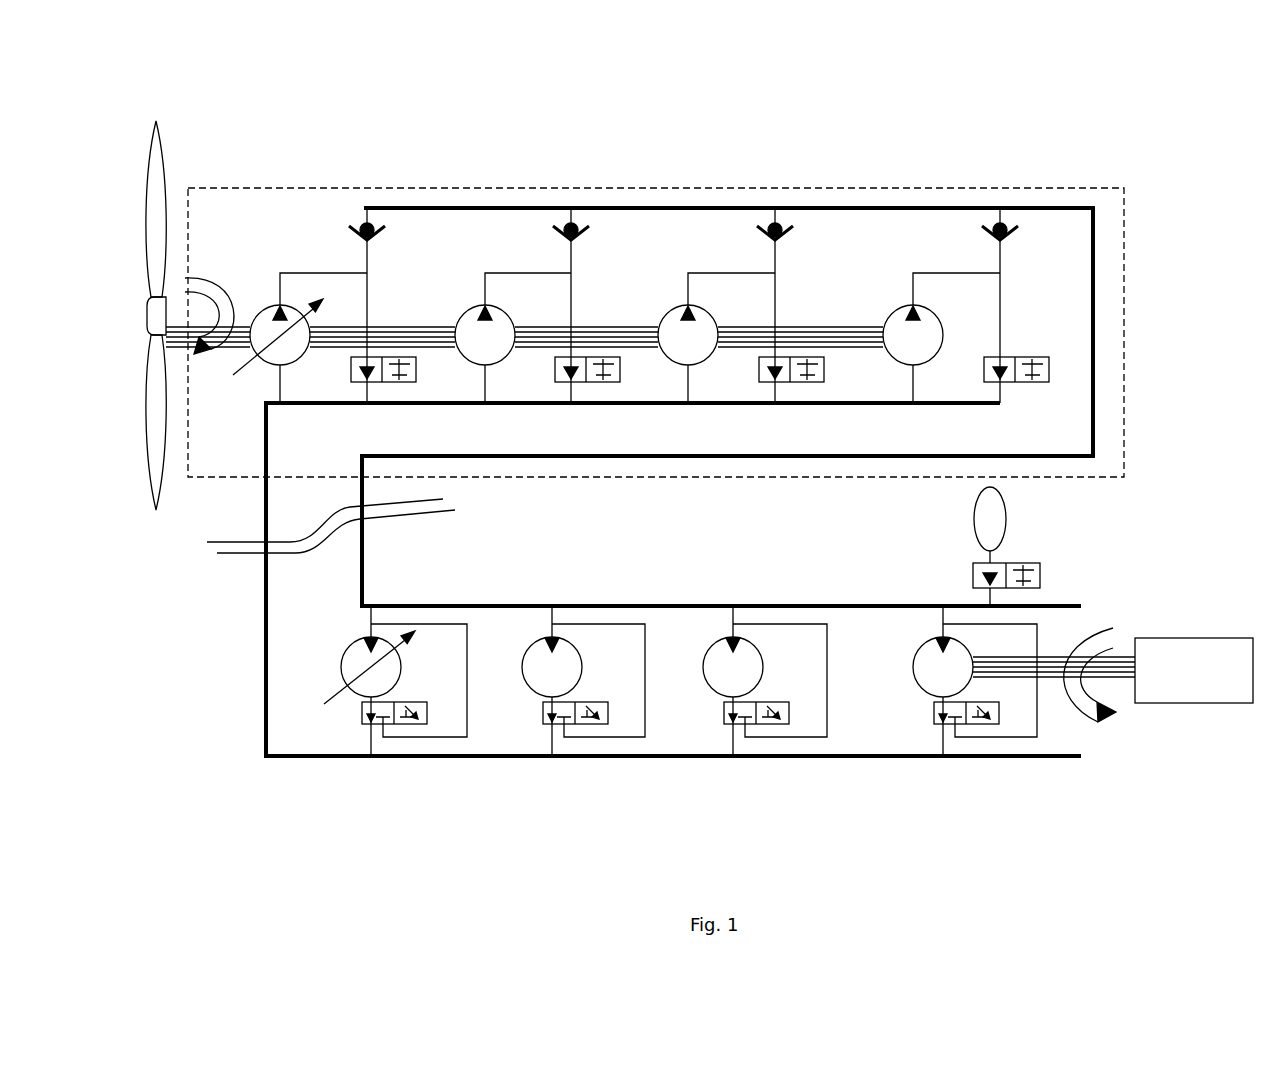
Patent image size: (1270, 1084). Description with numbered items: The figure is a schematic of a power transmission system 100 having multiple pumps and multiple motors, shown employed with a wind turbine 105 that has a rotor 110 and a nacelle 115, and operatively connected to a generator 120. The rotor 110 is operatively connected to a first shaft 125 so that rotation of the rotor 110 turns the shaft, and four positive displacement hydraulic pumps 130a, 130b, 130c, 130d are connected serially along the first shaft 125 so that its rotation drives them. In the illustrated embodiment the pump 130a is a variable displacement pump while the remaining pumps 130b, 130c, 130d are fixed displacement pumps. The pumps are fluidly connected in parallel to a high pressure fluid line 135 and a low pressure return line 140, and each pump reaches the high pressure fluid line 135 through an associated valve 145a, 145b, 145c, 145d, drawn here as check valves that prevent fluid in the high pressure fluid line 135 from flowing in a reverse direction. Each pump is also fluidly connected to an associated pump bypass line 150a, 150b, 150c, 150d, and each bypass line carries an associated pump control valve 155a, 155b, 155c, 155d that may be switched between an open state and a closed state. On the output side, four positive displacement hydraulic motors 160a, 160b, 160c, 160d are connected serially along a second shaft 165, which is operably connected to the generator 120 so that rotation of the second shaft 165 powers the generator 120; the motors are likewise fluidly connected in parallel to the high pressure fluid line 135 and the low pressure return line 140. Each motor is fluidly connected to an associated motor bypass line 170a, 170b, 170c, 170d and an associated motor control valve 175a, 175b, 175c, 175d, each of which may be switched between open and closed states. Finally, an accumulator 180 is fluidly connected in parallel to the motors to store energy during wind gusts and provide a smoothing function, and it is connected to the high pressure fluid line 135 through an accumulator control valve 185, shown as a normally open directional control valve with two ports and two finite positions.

The power transmission system 100 is at (1178, 252).
The wind turbine 105 is at (277, 124).
The rotor 110 is at (168, 222).
The nacelle 115 is at (1124, 333).
The generator 120 is at (1195, 638).
The first shaft 125 is at (340, 348).
The positive displacement hydraulic pump 130a is at (263, 306).
The positive displacement hydraulic pump 130b is at (468, 306).
The positive displacement hydraulic pump 130c is at (671, 306).
The positive displacement hydraulic pump 130d is at (896, 306).
The high pressure fluid line 135 is at (1093, 457).
The low pressure return line 140 is at (266, 758).
The valve 145a is at (353, 226).
The valve 145b is at (557, 226).
The valve 145c is at (761, 226).
The valve 145d is at (986, 226).
The pump bypass line 150a is at (367, 294).
The pump bypass line 150b is at (571, 294).
The pump bypass line 150c is at (775, 294).
The pump bypass line 150d is at (1000, 294).
The pump control valve 155a is at (418, 372).
The pump control valve 155b is at (622, 372).
The pump control valve 155c is at (826, 372).
The pump control valve 155d is at (1032, 382).
The positive displacement hydraulic motor 160a is at (377, 636).
The positive displacement hydraulic motor 160b is at (558, 636).
The positive displacement hydraulic motor 160c is at (739, 636).
The positive displacement hydraulic motor 160d is at (949, 636).
The second shaft 165 is at (1100, 682).
The motor bypass line 170a is at (470, 740).
The motor bypass line 170b is at (648, 740).
The motor bypass line 170c is at (830, 740).
The motor bypass line 170d is at (1040, 740).
The motor control valve 175a is at (432, 726).
The motor control valve 175b is at (613, 726).
The motor control valve 175c is at (794, 726).
The motor control valve 175d is at (1004, 726).
The accumulator 180 is at (1008, 520).
The accumulator control valve 185 is at (1041, 573).